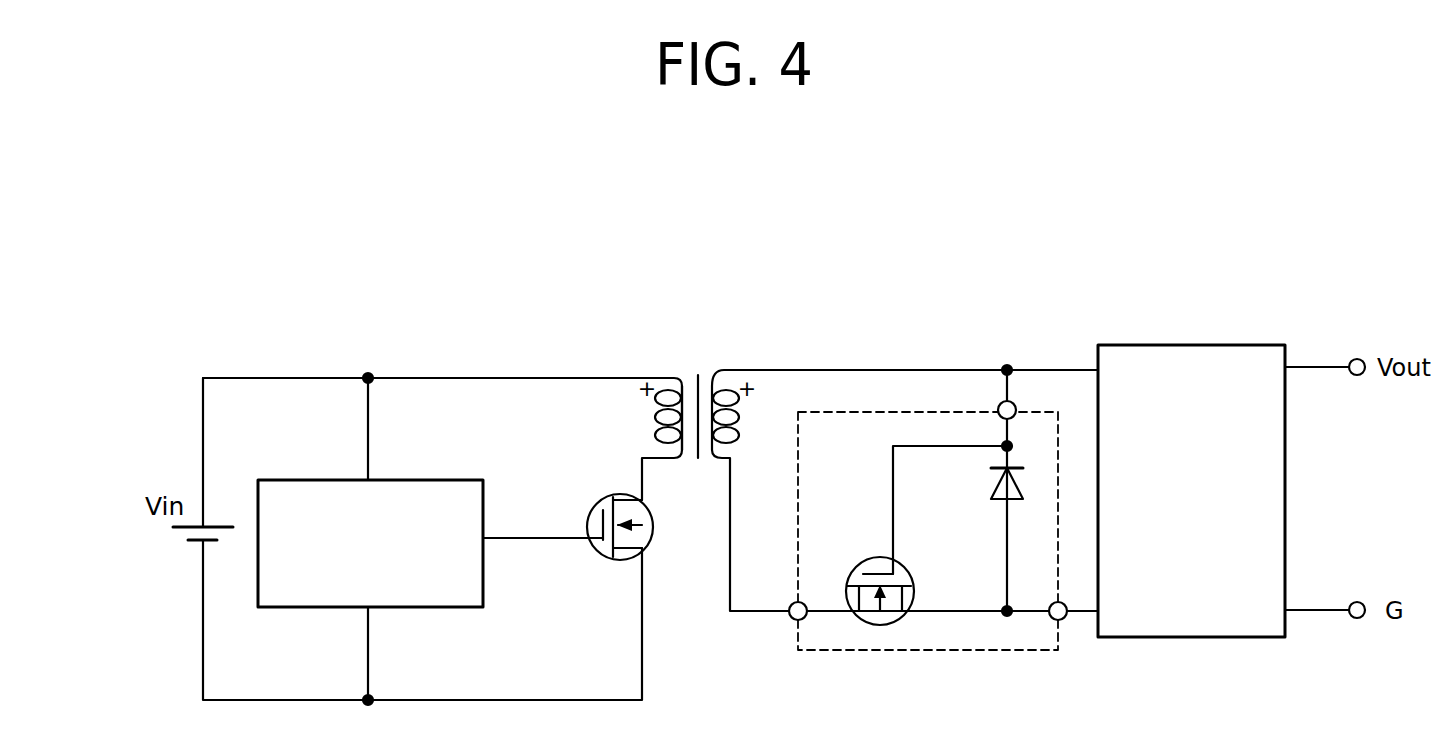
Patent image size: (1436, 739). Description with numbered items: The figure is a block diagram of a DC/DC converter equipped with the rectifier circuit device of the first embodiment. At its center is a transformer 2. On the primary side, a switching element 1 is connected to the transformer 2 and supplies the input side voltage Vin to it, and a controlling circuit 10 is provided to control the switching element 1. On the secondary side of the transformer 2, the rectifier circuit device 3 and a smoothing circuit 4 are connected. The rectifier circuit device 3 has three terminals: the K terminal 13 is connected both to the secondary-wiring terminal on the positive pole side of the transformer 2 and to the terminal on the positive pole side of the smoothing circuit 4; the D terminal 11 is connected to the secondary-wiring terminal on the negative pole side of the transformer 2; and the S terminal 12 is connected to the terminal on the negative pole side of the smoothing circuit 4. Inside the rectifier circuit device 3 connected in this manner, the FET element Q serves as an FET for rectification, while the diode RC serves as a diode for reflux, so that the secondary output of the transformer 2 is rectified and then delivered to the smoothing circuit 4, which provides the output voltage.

The switching element 1 is at (607, 495).
The transformer 2 is at (697, 368).
The rectifier circuit device 3 is at (927, 410).
The smoothing circuit 4 is at (1212, 345).
The controlling circuit 10 is at (322, 480).
The D terminal 11 is at (797, 621).
The S terminal 12 is at (1062, 621).
The K terminal 13 is at (1009, 400).
The FET element Q is at (880, 625).
The diode RC is at (996, 500).